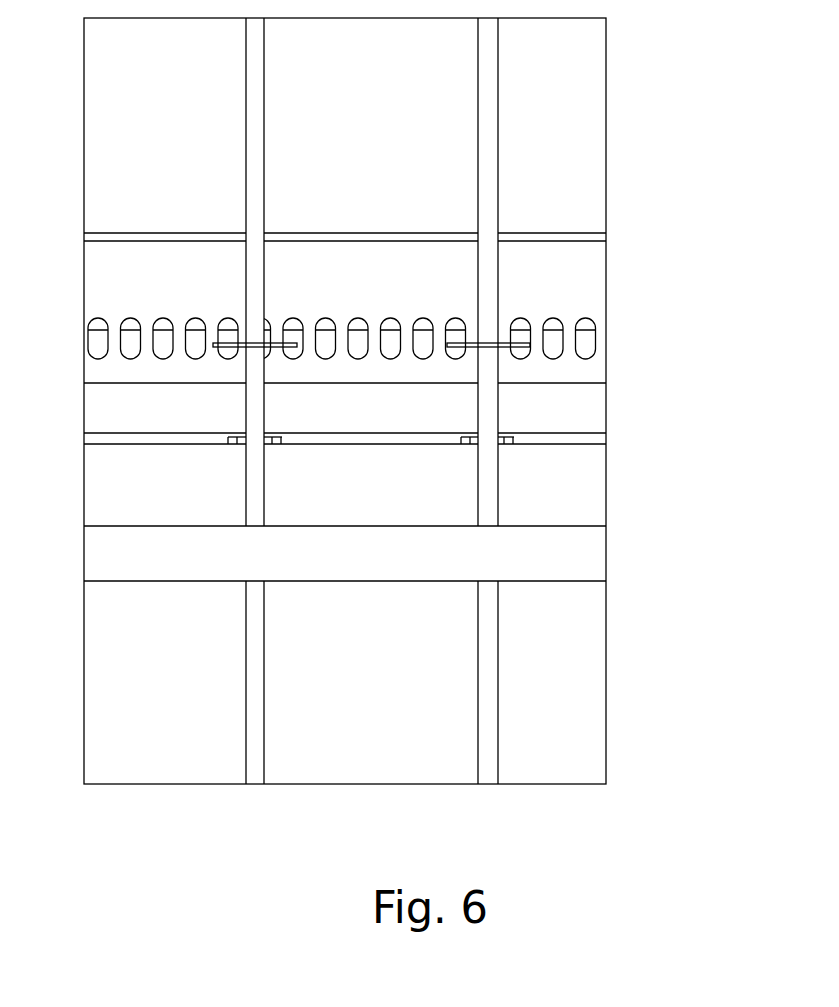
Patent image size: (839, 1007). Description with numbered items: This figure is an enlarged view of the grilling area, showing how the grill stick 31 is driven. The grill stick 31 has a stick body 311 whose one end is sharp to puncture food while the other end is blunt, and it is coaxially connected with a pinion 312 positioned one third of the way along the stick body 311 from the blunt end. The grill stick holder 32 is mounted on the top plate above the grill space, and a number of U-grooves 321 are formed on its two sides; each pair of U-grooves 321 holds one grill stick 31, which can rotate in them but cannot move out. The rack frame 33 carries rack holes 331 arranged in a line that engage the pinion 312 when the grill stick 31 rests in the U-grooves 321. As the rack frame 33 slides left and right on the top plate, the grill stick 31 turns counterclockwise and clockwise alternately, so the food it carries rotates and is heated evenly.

The grill stick 31 is at (508, 401).
The stick body 311 is at (486, 134).
The rack frame 33 is at (431, 287).
The rack holes 331 is at (583, 338).
The pinion 312 is at (486, 387).
The grill stick holder 32 is at (455, 473).
The U-grooves 321 is at (606, 438).